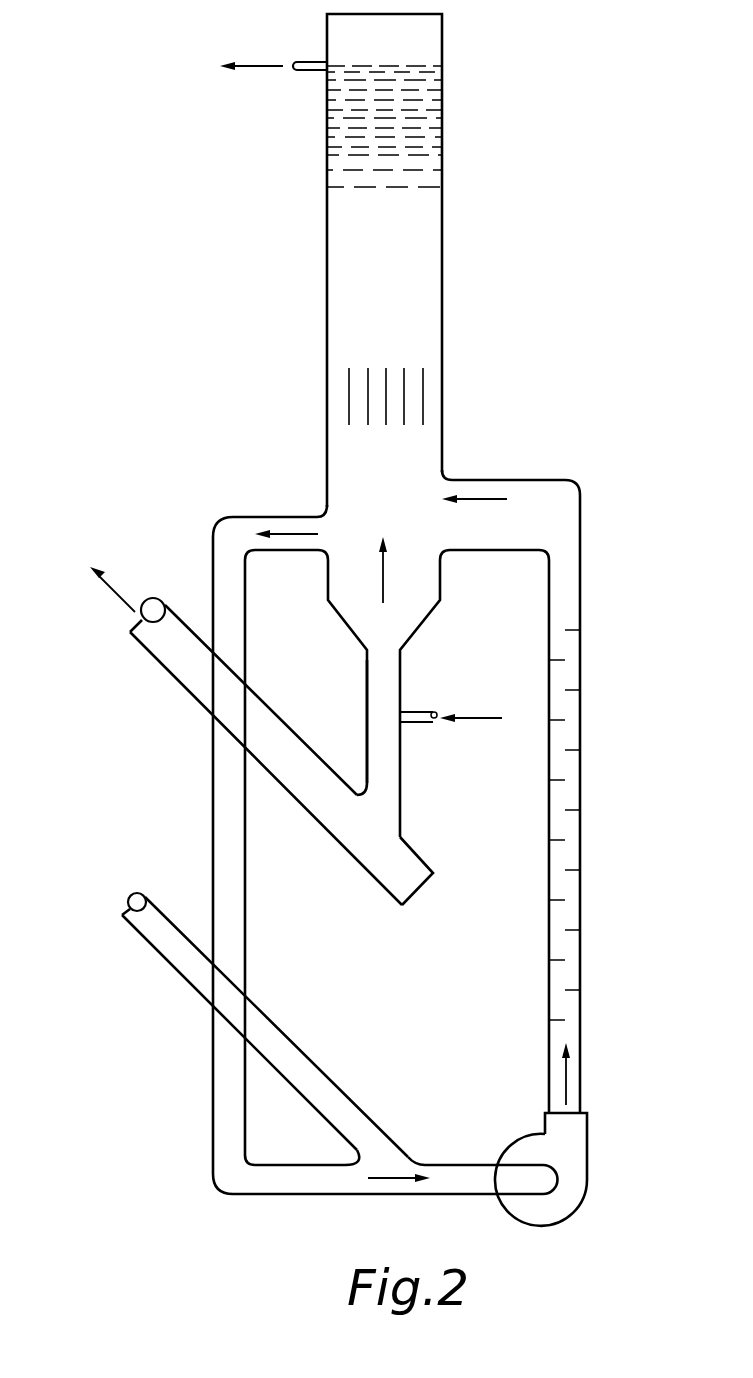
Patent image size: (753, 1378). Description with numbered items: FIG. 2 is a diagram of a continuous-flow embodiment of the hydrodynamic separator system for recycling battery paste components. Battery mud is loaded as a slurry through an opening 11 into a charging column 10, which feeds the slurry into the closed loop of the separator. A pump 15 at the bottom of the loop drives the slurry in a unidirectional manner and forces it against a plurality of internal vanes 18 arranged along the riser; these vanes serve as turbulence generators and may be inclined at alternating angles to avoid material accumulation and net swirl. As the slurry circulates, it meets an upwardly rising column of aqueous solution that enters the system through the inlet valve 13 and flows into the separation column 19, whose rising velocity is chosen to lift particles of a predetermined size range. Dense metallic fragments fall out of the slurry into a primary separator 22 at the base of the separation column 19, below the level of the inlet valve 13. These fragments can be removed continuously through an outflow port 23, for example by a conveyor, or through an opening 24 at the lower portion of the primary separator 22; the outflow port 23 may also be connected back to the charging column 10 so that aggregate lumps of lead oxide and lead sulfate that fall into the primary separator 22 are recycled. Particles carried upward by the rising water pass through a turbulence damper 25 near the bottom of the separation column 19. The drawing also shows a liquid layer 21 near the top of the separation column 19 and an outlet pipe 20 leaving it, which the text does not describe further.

The charging column 10 is at (178, 978).
The opening 11 is at (120, 900).
The inlet valve 13 is at (415, 723).
The pump 15 is at (588, 1168).
The internal vanes 18 is at (572, 747).
The separation column 19 is at (443, 268).
The outlet pipe 20 is at (327, 61).
The liquid layer 21 is at (388, 63).
The primary separator 22 is at (367, 875).
The outflow port 23 is at (137, 617).
The opening 24 is at (420, 893).
The turbulence damper 25 is at (387, 360).